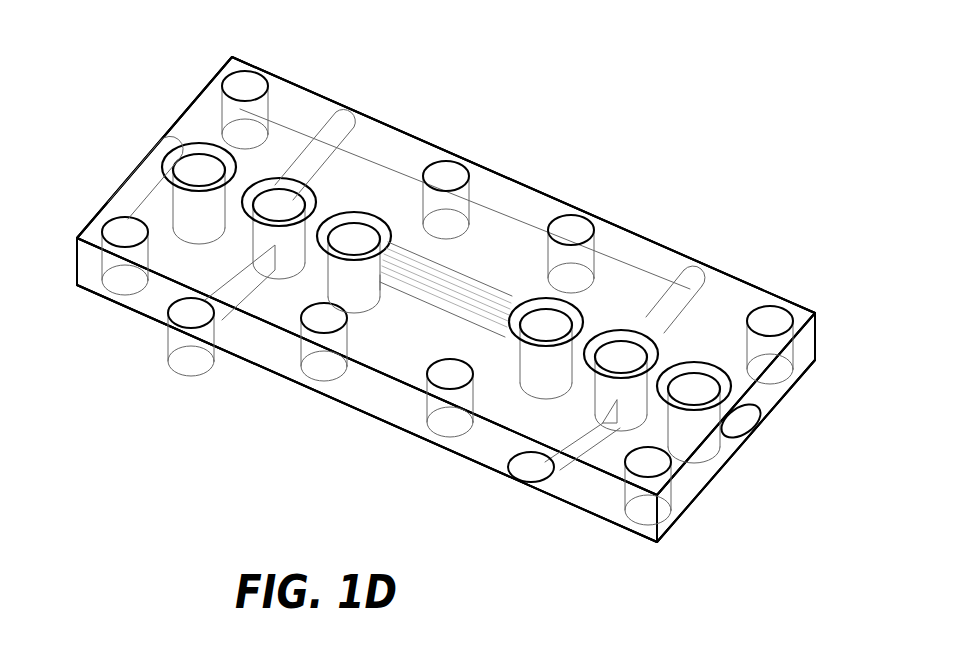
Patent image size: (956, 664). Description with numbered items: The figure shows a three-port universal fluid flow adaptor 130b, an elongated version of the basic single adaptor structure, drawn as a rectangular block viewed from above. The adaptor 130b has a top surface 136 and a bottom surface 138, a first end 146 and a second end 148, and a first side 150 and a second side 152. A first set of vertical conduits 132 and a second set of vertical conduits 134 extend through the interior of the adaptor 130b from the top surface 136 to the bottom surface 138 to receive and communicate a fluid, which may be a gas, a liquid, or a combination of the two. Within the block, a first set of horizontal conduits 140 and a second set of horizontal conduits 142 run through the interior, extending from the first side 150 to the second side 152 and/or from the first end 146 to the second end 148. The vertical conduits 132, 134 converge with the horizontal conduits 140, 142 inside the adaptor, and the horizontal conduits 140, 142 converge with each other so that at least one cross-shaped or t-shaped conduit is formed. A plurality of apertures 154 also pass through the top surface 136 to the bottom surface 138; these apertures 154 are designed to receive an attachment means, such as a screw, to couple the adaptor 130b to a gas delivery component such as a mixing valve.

The universal fluid flow adaptor 130b is at (688, 110).
The first set of vertical conduits 132 is at (197, 158).
The second set of vertical conduits 134 is at (545, 320).
The top surface 136 is at (640, 257).
The bottom surface 138 is at (690, 510).
The first set of horizontal conduits 140 is at (160, 149).
The second set of horizontal conduits 142 is at (708, 275).
The first end 146 is at (530, 190).
The second end 148 is at (365, 393).
The first side 150 is at (778, 393).
The second side 152 is at (108, 195).
The apertures 154 is at (250, 84).